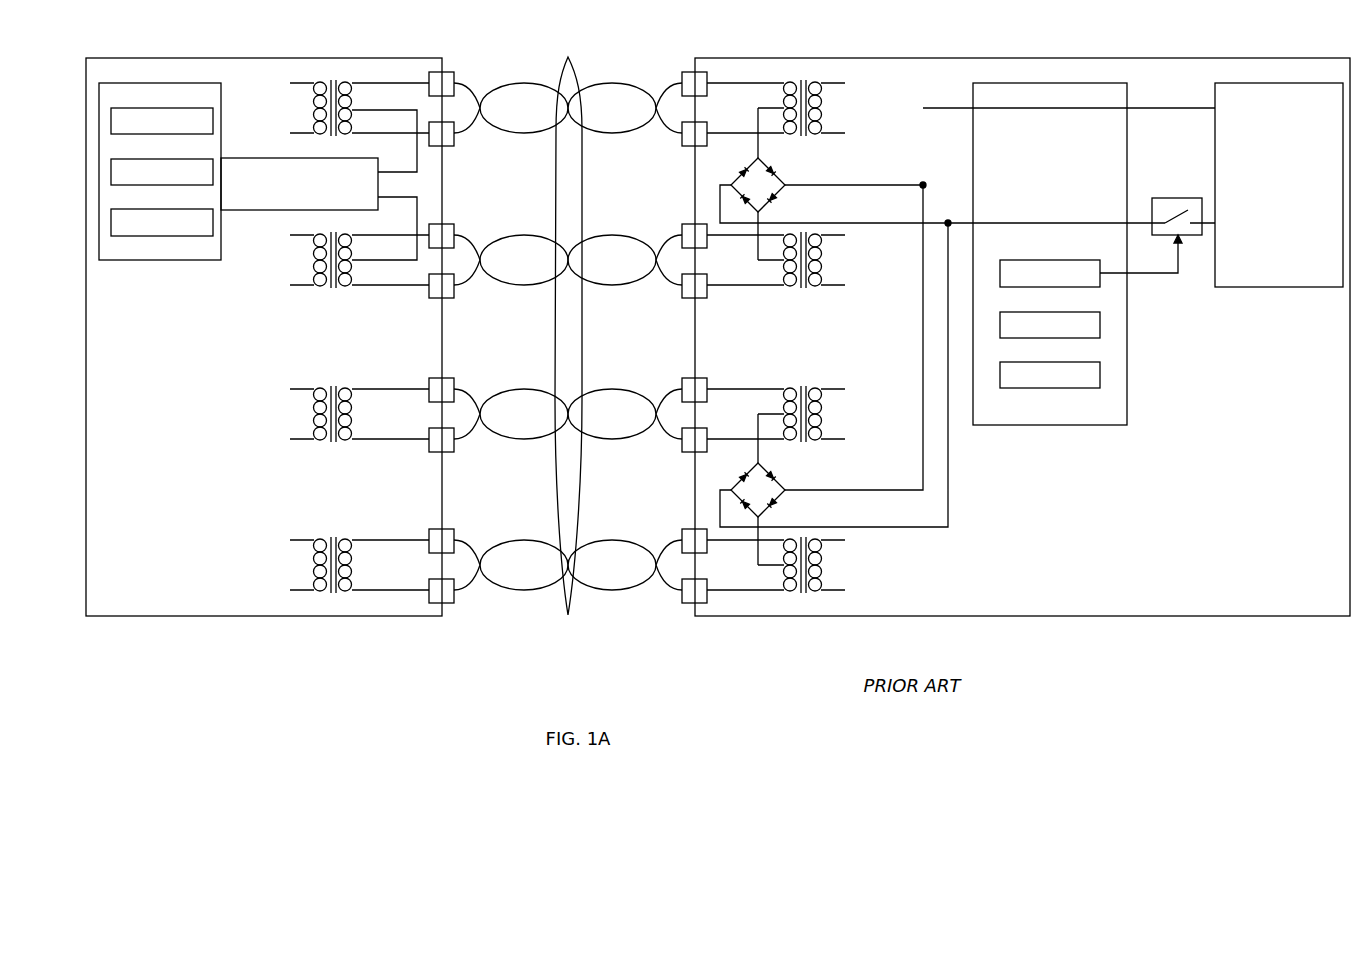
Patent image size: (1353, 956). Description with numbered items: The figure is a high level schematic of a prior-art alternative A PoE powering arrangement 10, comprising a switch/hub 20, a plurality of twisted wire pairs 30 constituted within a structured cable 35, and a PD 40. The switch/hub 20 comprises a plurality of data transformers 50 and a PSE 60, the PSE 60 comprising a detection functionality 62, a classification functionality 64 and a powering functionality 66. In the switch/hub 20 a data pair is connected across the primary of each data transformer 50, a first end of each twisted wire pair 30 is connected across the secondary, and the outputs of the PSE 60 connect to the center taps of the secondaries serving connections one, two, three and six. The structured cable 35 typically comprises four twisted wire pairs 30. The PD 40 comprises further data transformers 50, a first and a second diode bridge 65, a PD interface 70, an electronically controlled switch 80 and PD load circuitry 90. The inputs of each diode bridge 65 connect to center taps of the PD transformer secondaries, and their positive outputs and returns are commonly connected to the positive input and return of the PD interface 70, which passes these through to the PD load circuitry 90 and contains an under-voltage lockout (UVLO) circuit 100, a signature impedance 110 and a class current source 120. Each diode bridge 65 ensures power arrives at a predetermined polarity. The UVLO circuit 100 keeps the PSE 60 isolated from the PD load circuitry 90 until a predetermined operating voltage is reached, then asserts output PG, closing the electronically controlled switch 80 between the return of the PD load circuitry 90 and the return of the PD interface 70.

The PoE powering arrangement 10 is at (556, 30).
The switch/hub 20 is at (86, 286).
The twisted wire pairs 30 is at (605, 133).
The structured cable 35 is at (568, 615).
The PD 40 is at (1050, 58).
The data transformers 50 is at (342, 82).
The PSE 60 is at (188, 260).
The detection functionality 62 is at (111, 120).
The classification functionality 64 is at (111, 172).
The powering functionality 66 is at (111, 222).
The diode bridge 65 is at (768, 172).
The PD interface 70 is at (1050, 425).
The electronically controlled switch 80 is at (1165, 198).
The PD load circuitry 90 is at (1253, 83).
The under-voltage lockout (UVLO) circuit 100 is at (1050, 260).
The signature impedance 110 is at (1100, 327).
The class current source 120 is at (1100, 377).